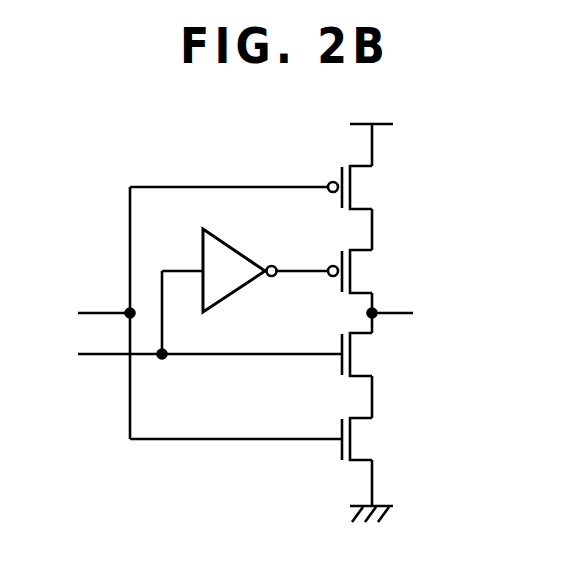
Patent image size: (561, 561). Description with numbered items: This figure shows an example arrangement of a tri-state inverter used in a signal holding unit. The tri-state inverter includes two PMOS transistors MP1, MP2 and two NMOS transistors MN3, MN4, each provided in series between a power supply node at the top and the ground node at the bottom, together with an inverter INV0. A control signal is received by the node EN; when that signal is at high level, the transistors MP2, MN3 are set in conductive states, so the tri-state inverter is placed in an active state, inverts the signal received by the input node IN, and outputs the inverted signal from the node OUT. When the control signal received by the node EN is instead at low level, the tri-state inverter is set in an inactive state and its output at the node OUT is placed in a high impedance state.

The PMOS transistor MP1 is at (374, 188).
The PMOS transistor MP2 is at (374, 271).
The NMOS transistor MN3 is at (374, 357).
The NMOS transistor MN4 is at (374, 440).
The inverter INV0 is at (240, 250).
The input node IN is at (58, 316).
The node EN is at (52, 357).
The node OUT is at (442, 315).